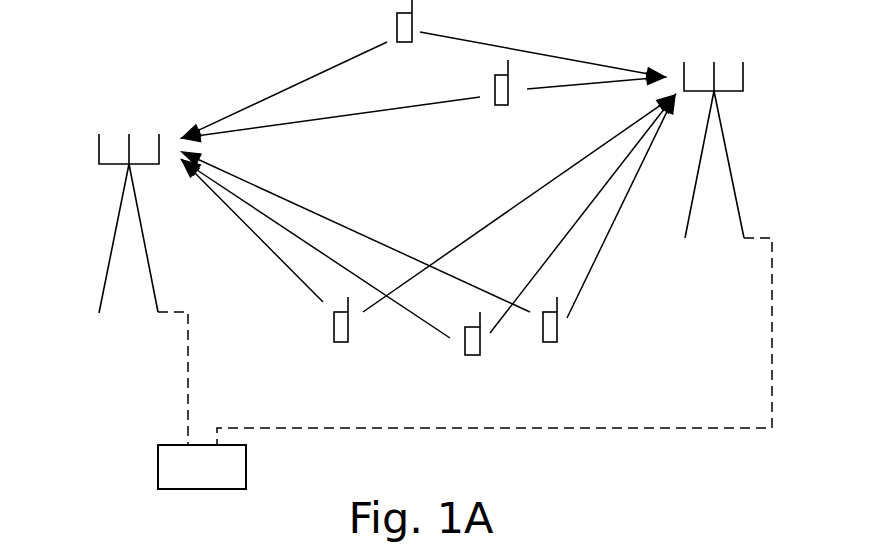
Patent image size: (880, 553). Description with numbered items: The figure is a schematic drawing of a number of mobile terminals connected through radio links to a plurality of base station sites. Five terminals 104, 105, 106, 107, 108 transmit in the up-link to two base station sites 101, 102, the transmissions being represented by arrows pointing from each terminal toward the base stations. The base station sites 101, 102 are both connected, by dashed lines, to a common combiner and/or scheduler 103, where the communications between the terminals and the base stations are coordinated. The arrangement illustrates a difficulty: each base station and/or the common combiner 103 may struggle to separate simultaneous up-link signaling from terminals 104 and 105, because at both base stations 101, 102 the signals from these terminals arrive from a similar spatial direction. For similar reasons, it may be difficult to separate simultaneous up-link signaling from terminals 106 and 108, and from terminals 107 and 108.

The base station site 101 is at (110, 268).
The base station site 102 is at (735, 193).
The common combiner and/or scheduler 103 is at (202, 467).
The terminal 104 is at (404, 42).
The terminal 105 is at (502, 105).
The terminal 106 is at (550, 342).
The terminal 107 is at (341, 342).
The terminal 108 is at (473, 355).